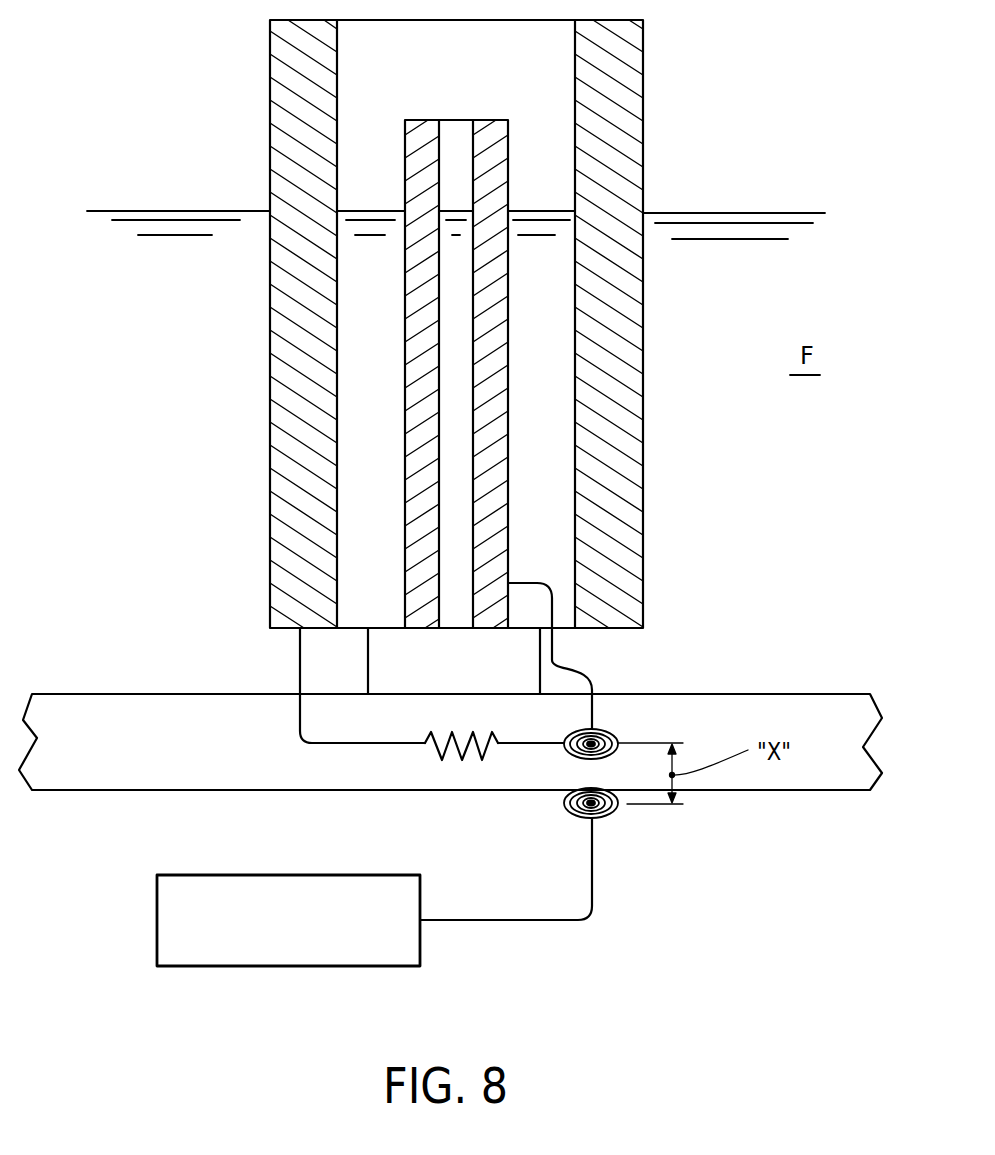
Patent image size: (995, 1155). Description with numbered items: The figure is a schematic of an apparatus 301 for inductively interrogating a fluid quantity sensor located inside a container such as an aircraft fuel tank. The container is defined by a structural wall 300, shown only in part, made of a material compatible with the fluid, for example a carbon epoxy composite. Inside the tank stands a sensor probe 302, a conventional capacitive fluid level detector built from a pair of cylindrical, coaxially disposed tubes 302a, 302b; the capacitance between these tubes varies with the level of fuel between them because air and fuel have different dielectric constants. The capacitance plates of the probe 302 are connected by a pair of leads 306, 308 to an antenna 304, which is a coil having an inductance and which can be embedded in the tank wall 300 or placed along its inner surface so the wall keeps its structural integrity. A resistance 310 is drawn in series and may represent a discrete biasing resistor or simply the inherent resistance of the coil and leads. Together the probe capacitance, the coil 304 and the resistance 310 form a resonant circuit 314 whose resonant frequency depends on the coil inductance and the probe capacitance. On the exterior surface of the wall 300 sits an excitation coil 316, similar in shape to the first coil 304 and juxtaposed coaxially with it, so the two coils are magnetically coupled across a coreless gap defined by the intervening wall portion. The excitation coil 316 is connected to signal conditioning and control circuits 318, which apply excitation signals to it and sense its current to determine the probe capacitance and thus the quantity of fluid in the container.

The structural wall 300 is at (770, 794).
The apparatus 301 is at (172, 624).
The sensor probe 302 is at (526, 324).
The tube 302a is at (612, 318).
The tube 302b is at (495, 458).
The antenna 304 is at (615, 737).
The lead 306 is at (592, 688).
The lead 308 is at (300, 665).
The resistance 310 is at (427, 757).
The resonant circuit 314 is at (277, 744).
The excitation coil 316 is at (600, 816).
The signal conditioning and control circuits 318 is at (276, 875).